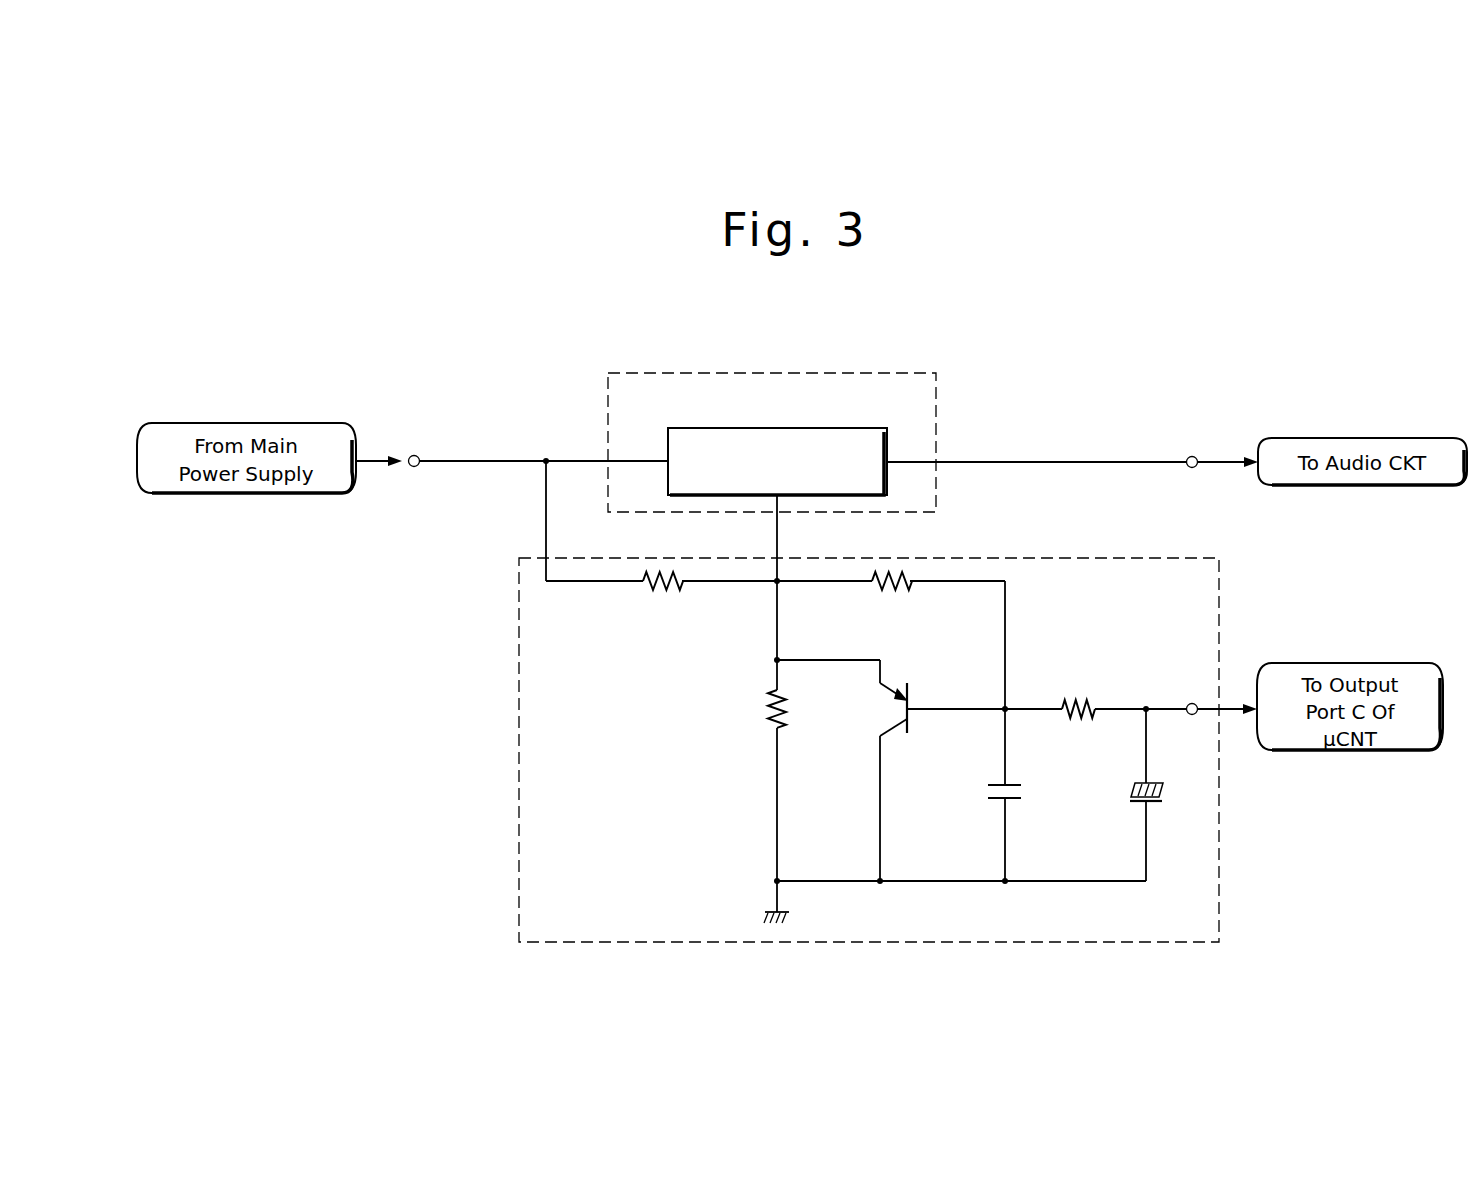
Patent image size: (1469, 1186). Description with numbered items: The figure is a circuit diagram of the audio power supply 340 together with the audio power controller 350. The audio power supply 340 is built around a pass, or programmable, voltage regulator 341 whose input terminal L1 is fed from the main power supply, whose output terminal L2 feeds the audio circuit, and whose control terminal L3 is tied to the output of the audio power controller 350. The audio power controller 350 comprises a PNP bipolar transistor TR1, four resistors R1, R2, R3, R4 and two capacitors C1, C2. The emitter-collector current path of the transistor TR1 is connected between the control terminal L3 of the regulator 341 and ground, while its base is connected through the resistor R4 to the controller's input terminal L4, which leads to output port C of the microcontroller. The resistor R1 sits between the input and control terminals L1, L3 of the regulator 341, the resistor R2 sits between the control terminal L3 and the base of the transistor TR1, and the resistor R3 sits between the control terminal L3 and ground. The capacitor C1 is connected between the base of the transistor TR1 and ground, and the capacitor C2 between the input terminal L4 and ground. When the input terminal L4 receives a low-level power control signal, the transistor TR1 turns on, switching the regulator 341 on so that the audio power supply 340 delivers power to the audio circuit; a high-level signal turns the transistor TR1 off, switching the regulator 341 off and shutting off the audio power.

The audio power supply 340 is at (938, 383).
The pass voltage regulator 341 is at (740, 428).
The audio power controller 350 is at (518, 803).
The input terminal L1 is at (418, 456).
The output terminal L2 is at (1191, 468).
The control terminal L3 is at (779, 535).
The input terminal L4 is at (1190, 703).
The resistor R1 is at (663, 598).
The resistor R2 is at (892, 598).
The resistor R3 is at (757, 709).
The resistor R4 is at (1078, 696).
The capacitor C1 is at (985, 832).
The capacitor C2 is at (1163, 795).
The PNP bipolar transistor TR1 is at (879, 770).